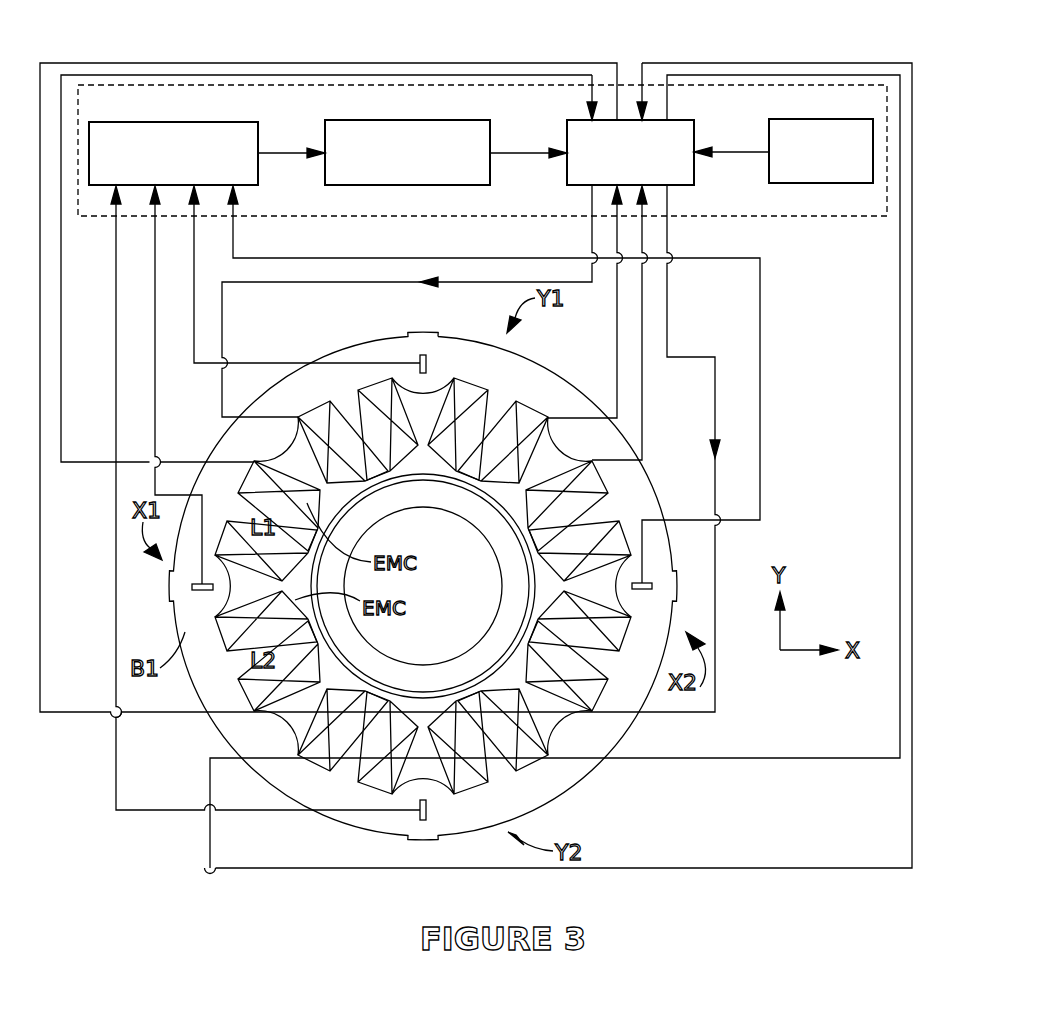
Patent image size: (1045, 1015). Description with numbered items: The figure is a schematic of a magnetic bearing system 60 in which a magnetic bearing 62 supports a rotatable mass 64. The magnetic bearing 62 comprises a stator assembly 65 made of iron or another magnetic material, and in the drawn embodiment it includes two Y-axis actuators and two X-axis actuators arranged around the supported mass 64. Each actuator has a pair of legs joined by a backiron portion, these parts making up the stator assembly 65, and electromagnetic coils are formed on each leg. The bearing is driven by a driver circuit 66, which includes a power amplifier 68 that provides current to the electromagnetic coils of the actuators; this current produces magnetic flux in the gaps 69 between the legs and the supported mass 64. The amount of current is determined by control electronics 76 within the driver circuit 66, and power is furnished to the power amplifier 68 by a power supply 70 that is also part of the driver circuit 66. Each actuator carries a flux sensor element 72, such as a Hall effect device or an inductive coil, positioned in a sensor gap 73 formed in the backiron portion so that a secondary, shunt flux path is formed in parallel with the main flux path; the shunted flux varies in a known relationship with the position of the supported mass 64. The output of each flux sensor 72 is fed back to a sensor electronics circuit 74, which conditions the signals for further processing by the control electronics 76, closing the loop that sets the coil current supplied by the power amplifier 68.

The magnetic bearing system 60 is at (173, 50).
The magnetic bearing 62 is at (312, 336).
The rotatable mass 64 is at (487, 542).
The stator assembly 65 is at (552, 368).
The driver circuit 66 is at (300, 217).
The power amplifier 68 is at (567, 125).
The gaps 69 is at (395, 680).
The power supply 70 is at (822, 119).
The flux sensor element 72 is at (178, 608).
The sensor gap 73 is at (427, 364).
The sensor electronics circuit 74 is at (215, 122).
The control electronics 76 is at (395, 120).